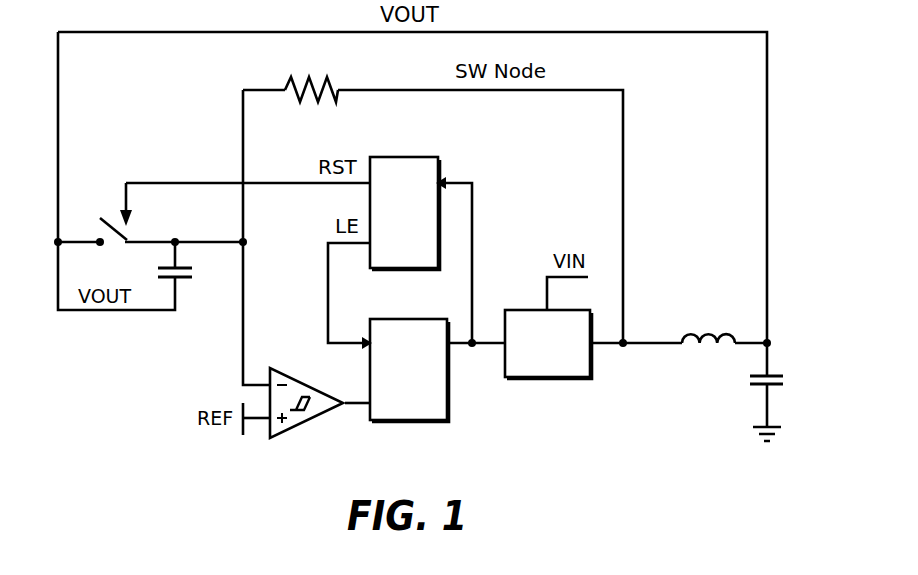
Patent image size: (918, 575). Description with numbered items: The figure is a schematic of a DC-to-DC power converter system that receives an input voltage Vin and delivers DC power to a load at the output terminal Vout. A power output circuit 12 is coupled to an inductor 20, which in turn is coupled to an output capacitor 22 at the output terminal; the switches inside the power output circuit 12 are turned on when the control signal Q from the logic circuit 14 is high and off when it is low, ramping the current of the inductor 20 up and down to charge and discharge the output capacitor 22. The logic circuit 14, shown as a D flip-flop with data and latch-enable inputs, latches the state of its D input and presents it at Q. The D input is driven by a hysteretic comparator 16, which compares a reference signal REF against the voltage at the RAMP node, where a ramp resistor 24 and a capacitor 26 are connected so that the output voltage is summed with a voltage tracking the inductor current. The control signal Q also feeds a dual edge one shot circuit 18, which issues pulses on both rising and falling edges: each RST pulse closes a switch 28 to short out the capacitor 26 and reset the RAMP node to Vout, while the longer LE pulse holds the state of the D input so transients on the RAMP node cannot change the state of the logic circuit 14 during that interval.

The power output circuit 12 is at (522, 379).
The logic circuit 14 is at (408, 422).
The hysteretic comparator 16 is at (296, 430).
The dual edge one shot circuit 18 is at (415, 156).
The inductor 20 is at (690, 326).
The output capacitor 22 is at (762, 388).
The ramp resistor 24 is at (304, 103).
The capacitor 26 is at (183, 280).
The switch 28 is at (127, 236).